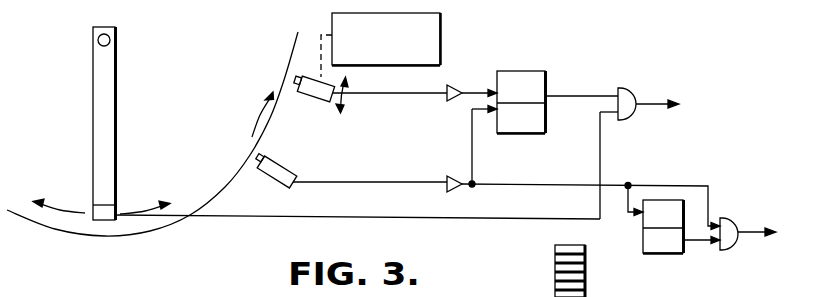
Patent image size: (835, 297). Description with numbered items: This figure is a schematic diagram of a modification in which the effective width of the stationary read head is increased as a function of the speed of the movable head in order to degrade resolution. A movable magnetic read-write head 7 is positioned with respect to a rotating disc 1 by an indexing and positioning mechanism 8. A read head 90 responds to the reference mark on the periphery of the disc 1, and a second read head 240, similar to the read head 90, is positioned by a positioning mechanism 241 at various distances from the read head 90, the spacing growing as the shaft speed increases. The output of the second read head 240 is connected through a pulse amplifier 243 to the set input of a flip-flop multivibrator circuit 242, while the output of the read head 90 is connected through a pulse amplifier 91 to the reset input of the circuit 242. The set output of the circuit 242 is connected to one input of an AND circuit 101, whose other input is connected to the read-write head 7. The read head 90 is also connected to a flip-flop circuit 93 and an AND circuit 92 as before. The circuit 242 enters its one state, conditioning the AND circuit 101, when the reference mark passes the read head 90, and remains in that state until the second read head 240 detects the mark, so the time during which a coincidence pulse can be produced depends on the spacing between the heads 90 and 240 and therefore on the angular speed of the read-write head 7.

The rotating disc 1 is at (224, 133).
The movable magnetic read-write head 7 is at (93, 210).
The indexing and positioning mechanism 8 is at (100, 83).
The read head 90 is at (293, 167).
The pulse amplifier 91 is at (459, 176).
The AND circuit 92 is at (736, 223).
The flip-flop circuit 93 is at (676, 255).
The AND circuit 101 is at (633, 95).
The second read head 240 is at (318, 100).
The positioning mechanism 241 is at (440, 45).
The flip-flop multivibrator circuit 242 is at (543, 72).
The pulse amplifier 243 is at (465, 78).